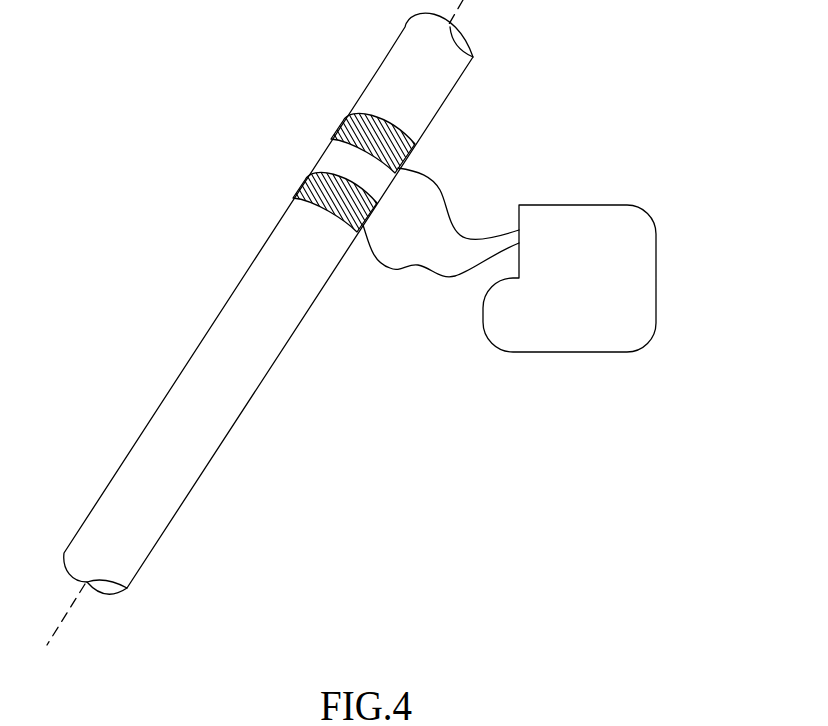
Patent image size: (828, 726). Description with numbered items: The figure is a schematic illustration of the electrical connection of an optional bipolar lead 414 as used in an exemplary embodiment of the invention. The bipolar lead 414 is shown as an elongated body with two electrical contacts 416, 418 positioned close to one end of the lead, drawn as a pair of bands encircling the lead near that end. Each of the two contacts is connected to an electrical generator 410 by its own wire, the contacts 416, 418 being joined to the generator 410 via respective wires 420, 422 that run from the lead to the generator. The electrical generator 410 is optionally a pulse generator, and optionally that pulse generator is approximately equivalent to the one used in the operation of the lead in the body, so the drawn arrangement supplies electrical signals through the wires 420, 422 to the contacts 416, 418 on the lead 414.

The electrical generator 410 is at (656, 276).
The bipolar lead 414 is at (119, 466).
The electrical contact 416 is at (305, 180).
The electrical contact 418 is at (343, 122).
The wire 420 is at (426, 266).
The wire 422 is at (432, 182).